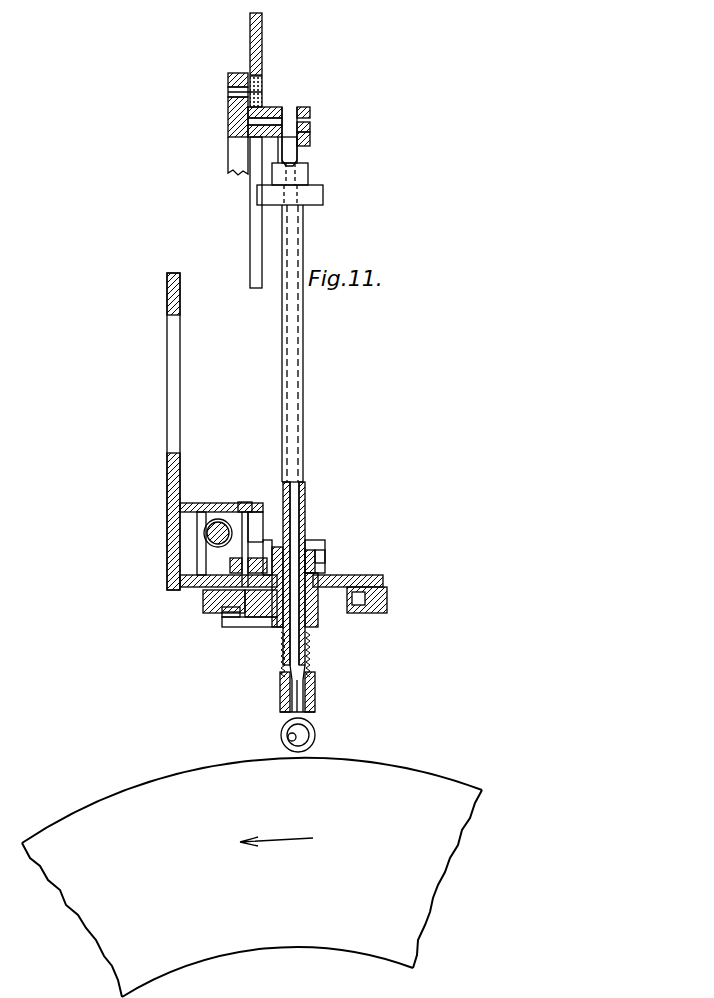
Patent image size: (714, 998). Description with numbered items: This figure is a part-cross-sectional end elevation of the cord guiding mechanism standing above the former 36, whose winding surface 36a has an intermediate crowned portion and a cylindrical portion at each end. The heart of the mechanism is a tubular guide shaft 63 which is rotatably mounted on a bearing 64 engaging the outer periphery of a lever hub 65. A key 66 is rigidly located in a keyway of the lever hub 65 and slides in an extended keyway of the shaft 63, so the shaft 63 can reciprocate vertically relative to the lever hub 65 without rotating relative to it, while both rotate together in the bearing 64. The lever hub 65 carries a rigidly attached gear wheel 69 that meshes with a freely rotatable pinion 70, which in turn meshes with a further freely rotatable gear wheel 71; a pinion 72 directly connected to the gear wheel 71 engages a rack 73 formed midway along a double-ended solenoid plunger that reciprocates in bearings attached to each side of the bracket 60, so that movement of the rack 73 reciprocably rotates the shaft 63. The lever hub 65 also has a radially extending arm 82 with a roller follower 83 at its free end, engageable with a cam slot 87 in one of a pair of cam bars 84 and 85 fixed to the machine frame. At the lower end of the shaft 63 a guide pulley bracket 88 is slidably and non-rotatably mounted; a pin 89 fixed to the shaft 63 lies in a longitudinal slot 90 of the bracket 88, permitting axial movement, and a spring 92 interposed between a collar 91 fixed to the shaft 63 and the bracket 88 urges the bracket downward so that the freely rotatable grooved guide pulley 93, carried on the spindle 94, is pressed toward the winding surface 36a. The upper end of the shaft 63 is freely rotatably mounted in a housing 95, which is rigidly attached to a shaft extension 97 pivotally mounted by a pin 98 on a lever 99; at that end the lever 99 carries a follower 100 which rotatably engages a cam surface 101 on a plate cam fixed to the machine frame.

The former 36 is at (415, 798).
The winding surface 36a is at (377, 765).
The bracket 60 is at (175, 496).
The tubular guide shaft 63 is at (300, 427).
The bearing 64 is at (318, 560).
The lever hub 65 is at (317, 612).
The key 66 is at (261, 603).
The gear wheel 69 is at (270, 548).
The pinion 70 is at (262, 553).
The gear wheel 71 is at (230, 566).
The pinion 72 is at (250, 502).
The rack 73 is at (233, 503).
The radially extending arm 82 is at (240, 627).
The roller follower 83 is at (225, 608).
The cam bar 84 is at (203, 597).
The cam bar 85 is at (380, 613).
The cam slot 87 is at (360, 598).
The guide pulley bracket 88 is at (281, 709).
The pin 89 is at (314, 692).
The slot 90 is at (312, 682).
The collar 91 is at (282, 634).
The spring 92 is at (282, 650).
The grooved guide pulley 93 is at (312, 738).
The spindle 94 is at (288, 738).
The housing 95 is at (309, 175).
The shaft extension 97 is at (311, 142).
The pin 98 is at (311, 118).
The lever 99 is at (268, 113).
The follower 100 is at (263, 80).
The cam surface 101 is at (253, 65).